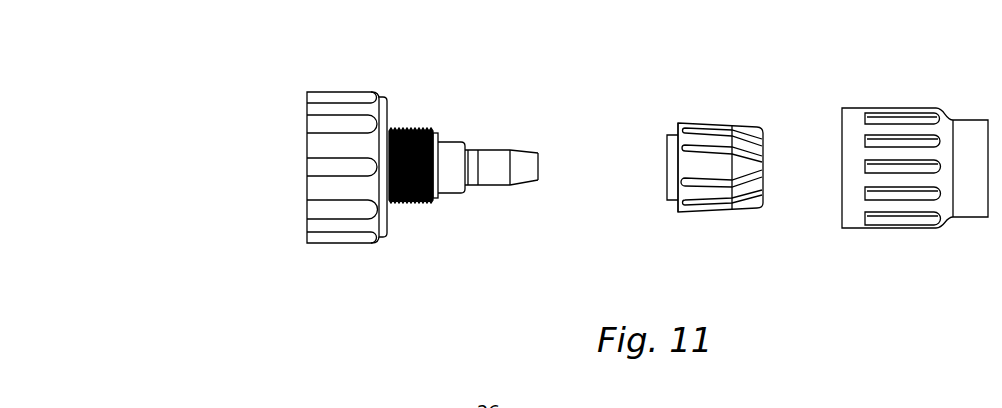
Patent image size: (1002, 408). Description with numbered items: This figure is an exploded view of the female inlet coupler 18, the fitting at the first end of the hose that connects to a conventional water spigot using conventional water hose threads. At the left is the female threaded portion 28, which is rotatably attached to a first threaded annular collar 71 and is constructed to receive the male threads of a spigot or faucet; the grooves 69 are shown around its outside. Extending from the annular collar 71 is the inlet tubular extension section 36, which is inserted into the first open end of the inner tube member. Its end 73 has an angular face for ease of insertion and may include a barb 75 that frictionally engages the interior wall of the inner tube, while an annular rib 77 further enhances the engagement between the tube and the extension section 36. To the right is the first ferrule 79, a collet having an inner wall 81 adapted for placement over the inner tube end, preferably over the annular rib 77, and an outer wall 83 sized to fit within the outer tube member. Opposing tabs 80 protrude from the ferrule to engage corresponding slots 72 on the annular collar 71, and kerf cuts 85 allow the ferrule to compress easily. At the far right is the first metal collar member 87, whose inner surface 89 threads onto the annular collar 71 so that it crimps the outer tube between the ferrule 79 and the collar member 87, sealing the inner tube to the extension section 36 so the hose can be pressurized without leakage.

The female inlet coupler 18 is at (206, 148).
The female threaded portion 28 is at (307, 128).
The grooves of knob 69 is at (358, 91).
The threaded annular collar 71 is at (410, 205).
The slots 72 is at (434, 133).
The inlet tubular extension section 36 is at (493, 178).
The annular rib 77 is at (476, 186).
The barb 75 is at (509, 149).
The end 73 is at (533, 155).
The first ferrule 79 is at (692, 122).
The inner wall 81 is at (671, 133).
The tabs 80 is at (667, 167).
The outer wall 83 is at (751, 125).
The kerf cuts 85 is at (758, 192).
The inner surface 89 is at (842, 175).
The metal collar member 87 is at (923, 108).